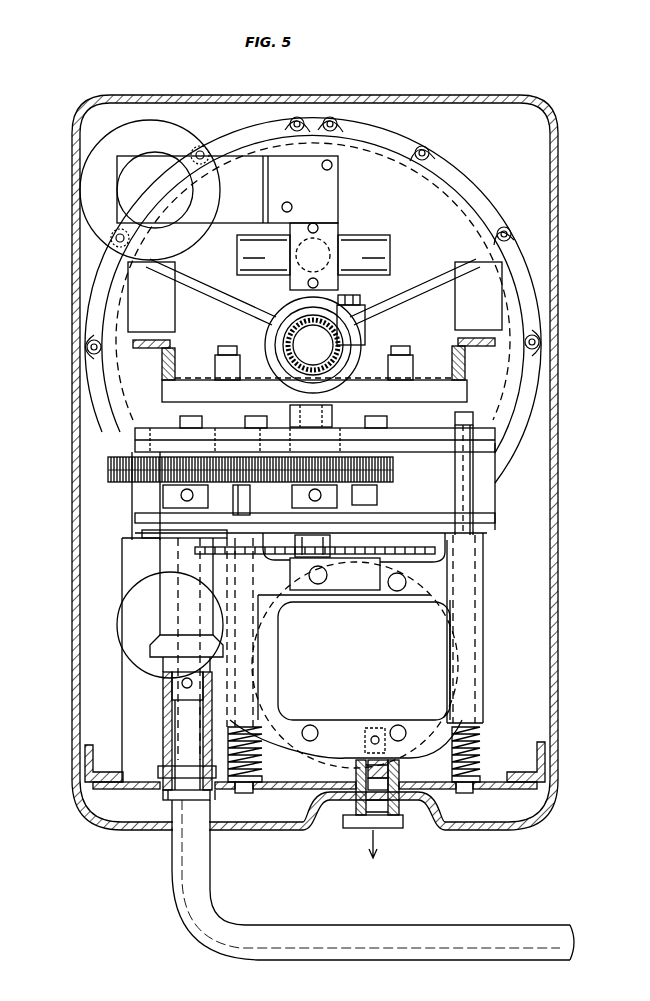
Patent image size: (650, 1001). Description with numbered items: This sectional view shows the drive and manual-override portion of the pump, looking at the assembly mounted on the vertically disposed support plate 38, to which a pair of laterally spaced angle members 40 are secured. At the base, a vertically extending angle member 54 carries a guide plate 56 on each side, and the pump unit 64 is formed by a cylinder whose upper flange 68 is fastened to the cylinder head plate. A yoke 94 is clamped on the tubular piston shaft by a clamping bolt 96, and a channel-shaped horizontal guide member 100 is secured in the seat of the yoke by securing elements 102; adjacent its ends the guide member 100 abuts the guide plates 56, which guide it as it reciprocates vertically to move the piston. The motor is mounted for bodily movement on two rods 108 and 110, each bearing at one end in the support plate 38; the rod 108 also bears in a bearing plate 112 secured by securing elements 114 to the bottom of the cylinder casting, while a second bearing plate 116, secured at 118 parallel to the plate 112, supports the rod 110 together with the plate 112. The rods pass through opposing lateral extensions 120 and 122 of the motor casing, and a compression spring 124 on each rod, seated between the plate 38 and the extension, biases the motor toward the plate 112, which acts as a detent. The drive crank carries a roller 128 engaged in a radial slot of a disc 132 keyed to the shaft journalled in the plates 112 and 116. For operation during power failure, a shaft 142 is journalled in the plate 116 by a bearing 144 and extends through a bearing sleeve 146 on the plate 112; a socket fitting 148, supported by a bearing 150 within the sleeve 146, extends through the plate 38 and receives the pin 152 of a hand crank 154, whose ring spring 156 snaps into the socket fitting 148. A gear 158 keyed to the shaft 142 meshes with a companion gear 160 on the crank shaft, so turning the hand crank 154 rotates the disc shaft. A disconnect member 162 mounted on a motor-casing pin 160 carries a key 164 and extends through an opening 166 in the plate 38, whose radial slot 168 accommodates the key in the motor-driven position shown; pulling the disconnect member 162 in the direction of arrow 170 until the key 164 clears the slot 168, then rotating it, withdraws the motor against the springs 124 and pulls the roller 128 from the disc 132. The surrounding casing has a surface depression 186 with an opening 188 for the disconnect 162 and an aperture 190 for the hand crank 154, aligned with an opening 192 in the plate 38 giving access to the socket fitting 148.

The support plate 38 is at (80, 803).
The angle members 40 is at (100, 768).
The angle member 54 is at (150, 347).
The guide plate 56 is at (176, 364).
The pump unit 64 is at (463, 192).
The flange 68 is at (440, 162).
The yoke 94 is at (290, 318).
The clamping bolt 96 is at (350, 300).
The guide member 100 is at (468, 392).
The securing elements 102 is at (228, 354).
The rod 108 is at (250, 510).
The rod 110 is at (468, 500).
The bearing plate 112 is at (412, 513).
The securing elements 114 is at (372, 542).
The bearing plate 116 is at (421, 446).
The securing elements 118 is at (246, 421).
The lateral extension 120 is at (480, 600).
The lateral extension 122 is at (222, 587).
The compression spring 124 is at (262, 760).
The roller 128 is at (305, 555).
The disc 132 is at (420, 553).
The shaft 142 is at (165, 514).
The bearing 144 is at (110, 463).
The bearing sleeve 146 is at (158, 570).
The socket fitting 148 is at (165, 699).
The bearing 150 is at (165, 662).
The pin 152 is at (162, 774).
The hand crank 154 is at (275, 950).
The ring spring 156 is at (168, 796).
The gear 158 is at (116, 474).
The gear / projecting pin 160 is at (363, 486).
The disconnect member 162 is at (347, 830).
The key 164 is at (400, 767).
The opening 166 is at (356, 786).
The slot 168 is at (400, 784).
The arrow 170 is at (380, 838).
The surface depression 186 is at (306, 829).
The opening 188 is at (426, 824).
The aperture 190 is at (166, 831).
The opening 192 is at (216, 795).